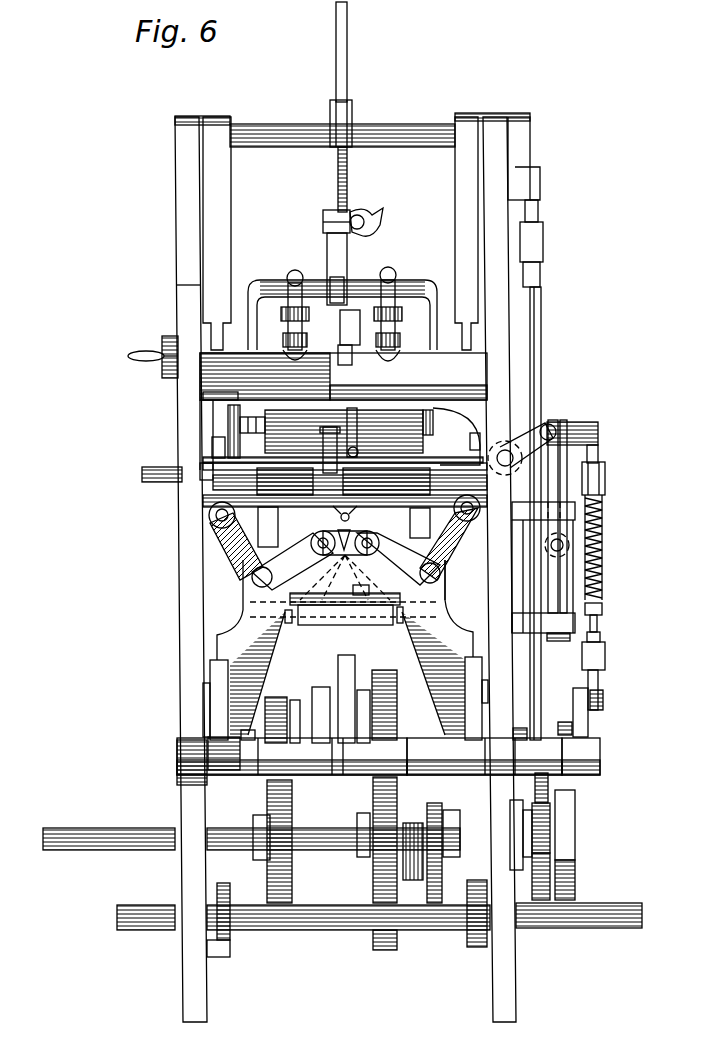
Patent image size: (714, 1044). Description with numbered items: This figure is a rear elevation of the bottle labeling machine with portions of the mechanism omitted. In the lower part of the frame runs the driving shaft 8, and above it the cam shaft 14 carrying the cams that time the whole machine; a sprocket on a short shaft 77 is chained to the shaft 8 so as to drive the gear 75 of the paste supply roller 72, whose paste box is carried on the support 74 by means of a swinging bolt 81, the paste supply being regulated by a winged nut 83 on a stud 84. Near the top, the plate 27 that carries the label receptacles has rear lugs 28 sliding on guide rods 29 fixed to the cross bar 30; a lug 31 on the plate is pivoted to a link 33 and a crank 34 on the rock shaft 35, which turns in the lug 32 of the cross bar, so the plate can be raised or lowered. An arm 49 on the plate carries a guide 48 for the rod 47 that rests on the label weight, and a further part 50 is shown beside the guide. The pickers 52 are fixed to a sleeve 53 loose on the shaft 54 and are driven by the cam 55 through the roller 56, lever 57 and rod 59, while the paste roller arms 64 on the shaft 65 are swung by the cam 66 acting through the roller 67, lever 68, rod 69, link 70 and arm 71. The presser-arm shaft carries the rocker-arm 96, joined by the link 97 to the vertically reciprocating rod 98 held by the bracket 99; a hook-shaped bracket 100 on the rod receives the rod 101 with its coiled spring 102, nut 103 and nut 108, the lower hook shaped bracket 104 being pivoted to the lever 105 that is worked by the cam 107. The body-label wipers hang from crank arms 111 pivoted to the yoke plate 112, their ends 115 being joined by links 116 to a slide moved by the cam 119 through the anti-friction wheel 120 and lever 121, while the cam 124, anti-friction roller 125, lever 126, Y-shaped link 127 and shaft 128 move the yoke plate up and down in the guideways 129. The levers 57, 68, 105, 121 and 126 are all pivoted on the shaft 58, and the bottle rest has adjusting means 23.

The shaft 8 is at (138, 911).
The cam shaft 14 is at (143, 830).
The means for adjusting the rest 23 is at (352, 517).
The plate 27 is at (426, 290).
The lugs 28 is at (288, 320).
The guide rods 29 is at (294, 278).
The cross bar 30 is at (343, 376).
The lug 31 is at (341, 320).
The lug 32 is at (342, 352).
The link 33 is at (390, 370).
The crank 34 is at (356, 372).
The rock shaft 35 is at (245, 352).
The rod 47 is at (346, 60).
The guide 48 is at (324, 222).
The arm 49 is at (332, 170).
The cam 50 is at (376, 220).
The pickers 52 is at (278, 527).
The sleeve 53 is at (350, 481).
The shaft 54 is at (215, 503).
The cam 55 is at (440, 880).
The roller 56 is at (445, 770).
The lever 57 is at (398, 772).
The shaft 58 is at (596, 760).
The rod 59 is at (455, 600).
The arms 64 is at (229, 241).
The shaft 65 is at (392, 130).
The cam 66 is at (556, 872).
The roller 67 is at (545, 786).
The lever 68 is at (521, 740).
The rod 69 is at (541, 314).
The link 70 is at (538, 214).
The arm 71 is at (532, 166).
The supply roller 72 is at (418, 405).
The support 74 is at (448, 462).
The gear 75 is at (228, 420).
The short shaft 77 is at (160, 483).
The swinging bolt 81 is at (330, 448).
The winged nut 83 is at (360, 454).
The stud 84 is at (357, 440).
The rocker-arm 96 is at (532, 430).
The link 97 is at (582, 424).
The vertically reciprocating rod 98 is at (560, 424).
The bracket 99 is at (520, 515).
The hook-shaped bracket 100 is at (598, 446).
The rod 101 is at (604, 520).
The coiled spring 102 is at (605, 552).
The nut 103 is at (603, 612).
The hook shaped bracket 104 is at (600, 683).
The lever 105 is at (590, 732).
The cam 107 is at (575, 798).
The nut 108 is at (606, 466).
The crank arms 111 is at (347, 547).
The yoke plate 112 is at (242, 637).
The ends of the crank arms 115 is at (346, 560).
The links 116 is at (345, 533).
The cam 119 is at (293, 888).
The anti-friction wheel 120 is at (297, 700).
The lever 121 is at (316, 690).
The cam 124 is at (388, 726).
The anti-friction roller 125 is at (378, 682).
The lever 126 is at (365, 840).
The Y-shaped link 127 is at (345, 617).
The shaft 128 is at (369, 594).
The guideways 129 is at (222, 672).